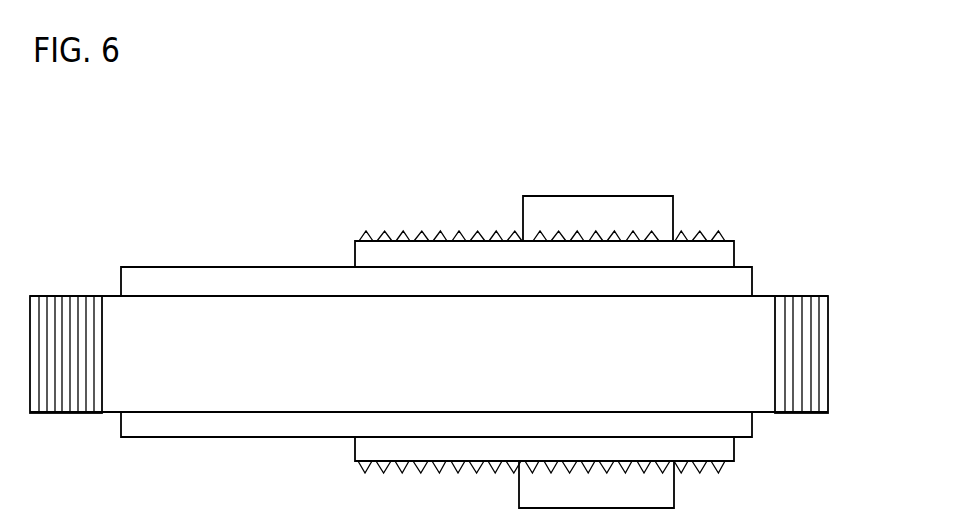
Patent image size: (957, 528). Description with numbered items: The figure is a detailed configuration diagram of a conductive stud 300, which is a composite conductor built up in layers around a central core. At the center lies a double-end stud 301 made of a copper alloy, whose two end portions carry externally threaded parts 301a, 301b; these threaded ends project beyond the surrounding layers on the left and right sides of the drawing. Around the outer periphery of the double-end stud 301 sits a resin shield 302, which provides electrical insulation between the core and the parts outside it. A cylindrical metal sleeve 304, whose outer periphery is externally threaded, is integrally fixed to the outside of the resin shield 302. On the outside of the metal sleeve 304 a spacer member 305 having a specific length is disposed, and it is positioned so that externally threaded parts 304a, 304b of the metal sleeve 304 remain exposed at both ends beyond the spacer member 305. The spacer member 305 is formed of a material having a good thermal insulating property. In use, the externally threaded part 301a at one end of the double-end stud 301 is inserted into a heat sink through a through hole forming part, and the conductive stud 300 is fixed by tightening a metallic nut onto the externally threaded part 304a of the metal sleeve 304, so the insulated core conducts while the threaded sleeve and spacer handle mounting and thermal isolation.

The conductive stud 300 is at (210, 57).
The double-end stud 301 is at (192, 296).
The externally threaded part 301a is at (80, 296).
The externally threaded part 301b is at (824, 296).
The resin shield 302 is at (283, 267).
The metal sleeve 304 is at (487, 238).
The externally threaded part 304a is at (393, 238).
The externally threaded part 304b is at (720, 238).
The spacer member 305 is at (620, 196).